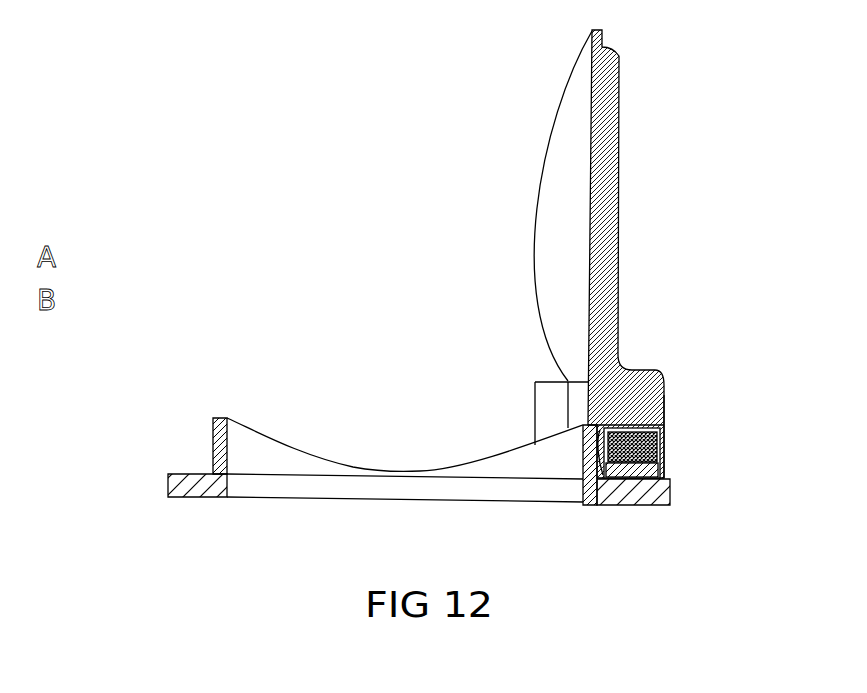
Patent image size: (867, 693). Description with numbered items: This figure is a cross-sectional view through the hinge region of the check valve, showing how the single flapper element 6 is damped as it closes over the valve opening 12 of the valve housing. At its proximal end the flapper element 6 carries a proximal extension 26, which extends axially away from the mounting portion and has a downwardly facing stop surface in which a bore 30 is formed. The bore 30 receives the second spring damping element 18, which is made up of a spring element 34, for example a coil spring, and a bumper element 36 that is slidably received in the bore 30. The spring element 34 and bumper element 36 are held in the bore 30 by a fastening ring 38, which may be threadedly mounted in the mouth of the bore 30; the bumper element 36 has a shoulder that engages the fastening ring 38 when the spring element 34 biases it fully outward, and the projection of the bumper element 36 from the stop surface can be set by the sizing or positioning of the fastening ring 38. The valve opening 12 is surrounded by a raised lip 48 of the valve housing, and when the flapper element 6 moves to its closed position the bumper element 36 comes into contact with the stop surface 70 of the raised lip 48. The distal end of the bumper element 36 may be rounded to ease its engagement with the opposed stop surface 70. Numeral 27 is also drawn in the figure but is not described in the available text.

The flapper element 6 is at (614, 184).
The valve opening 12 is at (259, 458).
The second spring damping element 18 is at (638, 478).
The proximal extension 26 is at (664, 422).
The post 27 is at (590, 500).
The bore 30 is at (606, 424).
The spring element 34 is at (660, 448).
The bumper element 36 is at (663, 408).
The fastening ring 38 is at (623, 478).
The raised lip 48 is at (215, 444).
The stop surface 70 is at (603, 432).